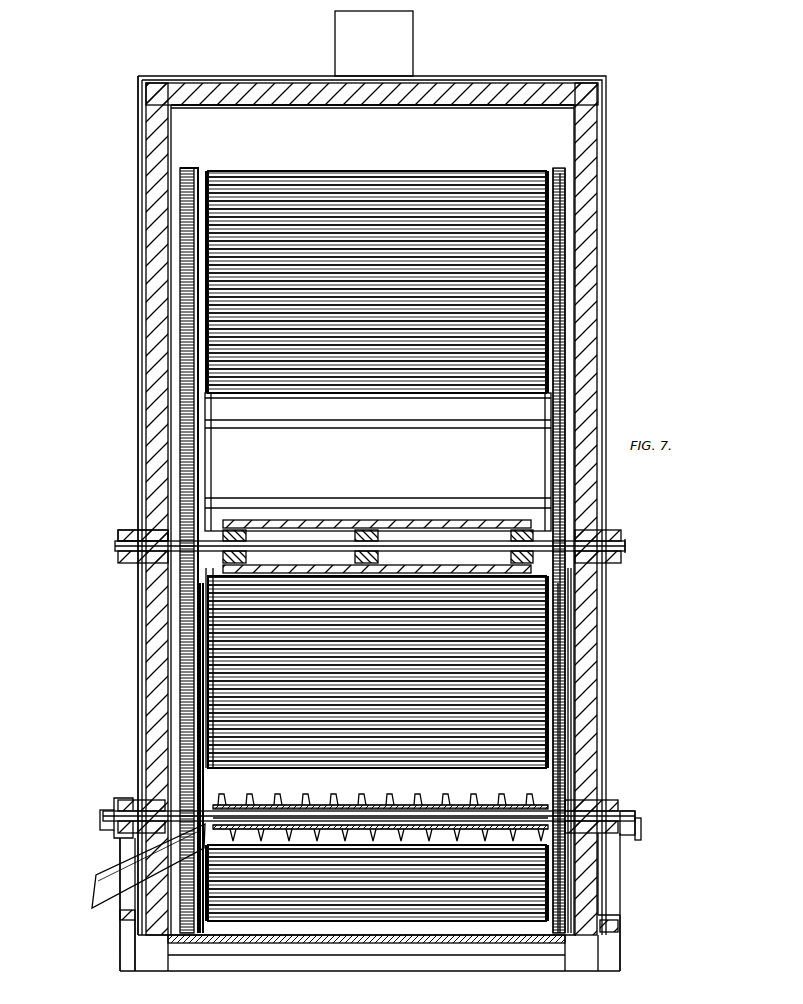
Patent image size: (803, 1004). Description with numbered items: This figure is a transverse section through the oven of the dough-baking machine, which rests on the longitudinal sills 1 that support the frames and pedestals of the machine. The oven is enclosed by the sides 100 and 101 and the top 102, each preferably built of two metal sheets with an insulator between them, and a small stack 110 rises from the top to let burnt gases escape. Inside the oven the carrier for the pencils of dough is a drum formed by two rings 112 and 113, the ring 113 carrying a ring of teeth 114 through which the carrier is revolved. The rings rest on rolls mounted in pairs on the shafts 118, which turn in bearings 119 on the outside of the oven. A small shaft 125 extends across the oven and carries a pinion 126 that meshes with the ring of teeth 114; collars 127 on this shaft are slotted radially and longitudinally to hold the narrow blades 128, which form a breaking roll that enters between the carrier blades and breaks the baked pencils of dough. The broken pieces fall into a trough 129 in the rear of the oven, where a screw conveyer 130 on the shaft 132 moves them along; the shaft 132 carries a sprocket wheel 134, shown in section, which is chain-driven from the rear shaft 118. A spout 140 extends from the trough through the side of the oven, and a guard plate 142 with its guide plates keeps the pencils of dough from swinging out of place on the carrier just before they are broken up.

The longitudinal sill 1 is at (625, 945).
The oven side 100 is at (142, 344).
The oven side 101 is at (578, 332).
The oven top 102 is at (402, 88).
The stack 110 is at (374, 43).
The carrier ring 112 is at (195, 560).
The carrier ring 113 is at (545, 283).
The ring of teeth 114 is at (180, 683).
The roll shaft 118 is at (627, 806).
The bearing 119 is at (620, 848).
The breaking-roll shaft 125 is at (618, 538).
The pinion 126 is at (172, 520).
The collar 127 is at (495, 529).
The breaking blade 128 is at (318, 561).
The trough 129 is at (380, 806).
The screw conveyer 130 is at (450, 800).
The conveyer shaft 132 is at (297, 800).
The sprocket wheel 134 is at (583, 740).
The spout 140 is at (95, 878).
The guard plate 142 is at (378, 462).